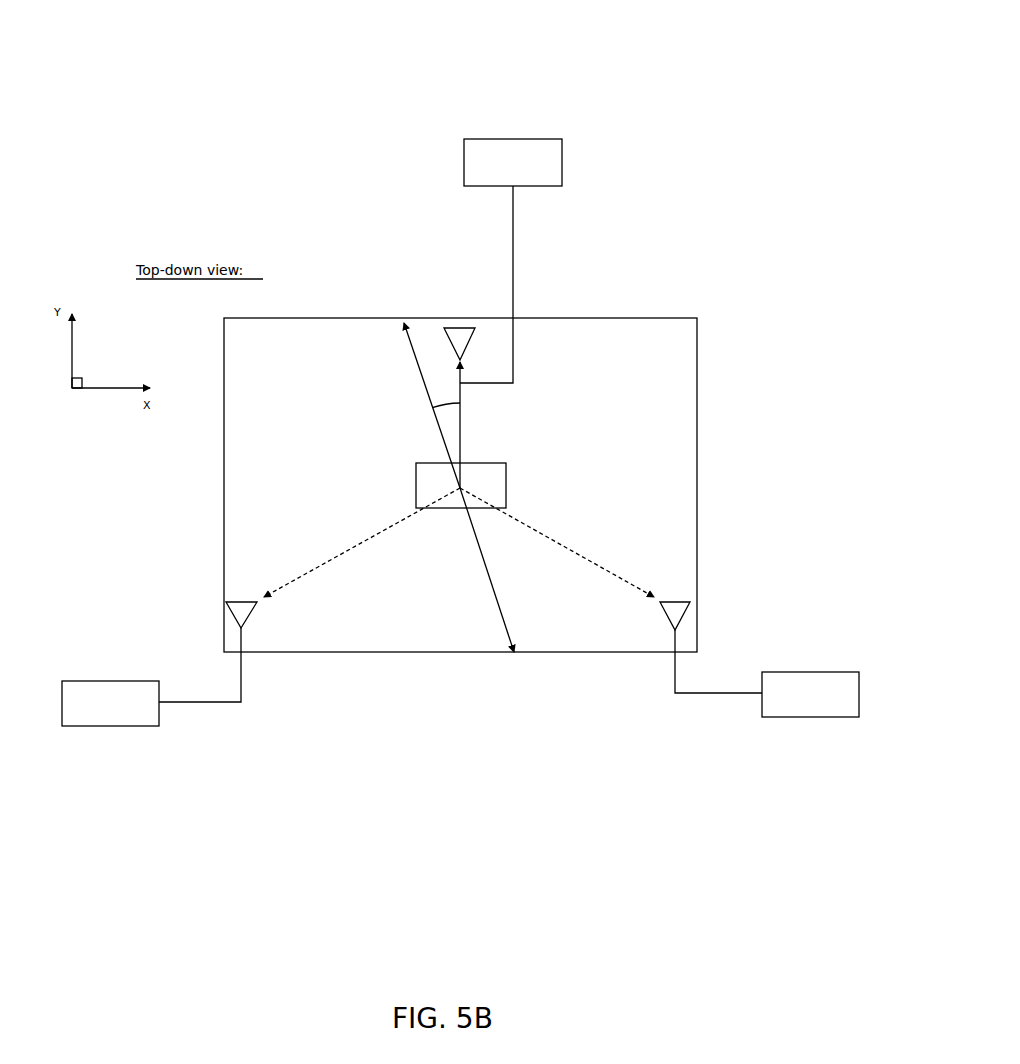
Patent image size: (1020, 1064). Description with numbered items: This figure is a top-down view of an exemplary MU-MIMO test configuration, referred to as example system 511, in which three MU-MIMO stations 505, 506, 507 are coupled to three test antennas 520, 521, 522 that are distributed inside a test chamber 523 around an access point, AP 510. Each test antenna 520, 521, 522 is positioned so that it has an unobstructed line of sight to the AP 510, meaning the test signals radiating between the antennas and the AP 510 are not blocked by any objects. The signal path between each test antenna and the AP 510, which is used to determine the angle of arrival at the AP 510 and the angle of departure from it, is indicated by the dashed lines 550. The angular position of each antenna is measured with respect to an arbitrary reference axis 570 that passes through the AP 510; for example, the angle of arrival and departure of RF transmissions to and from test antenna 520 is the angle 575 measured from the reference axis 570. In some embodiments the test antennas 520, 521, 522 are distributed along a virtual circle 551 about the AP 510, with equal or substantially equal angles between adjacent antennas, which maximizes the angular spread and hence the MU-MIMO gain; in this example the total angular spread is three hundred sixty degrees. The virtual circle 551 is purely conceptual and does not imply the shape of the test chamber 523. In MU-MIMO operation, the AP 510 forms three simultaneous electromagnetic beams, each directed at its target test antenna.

The example system 511 is at (494, 68).
The MU-MIMO station 505 is at (552, 139).
The MU-MIMO station 506 is at (780, 672).
The MU-MIMO station 507 is at (139, 681).
The AP 510 is at (496, 463).
The test antenna 520 is at (450, 328).
The test antenna 521 is at (688, 602).
The test antenna 522 is at (228, 602).
The test chamber 523 is at (593, 318).
The dashed lines 550 is at (368, 537).
The virtual circle 551 is at (378, 242).
The reference axis 570 is at (426, 383).
The angle 575 is at (448, 402).